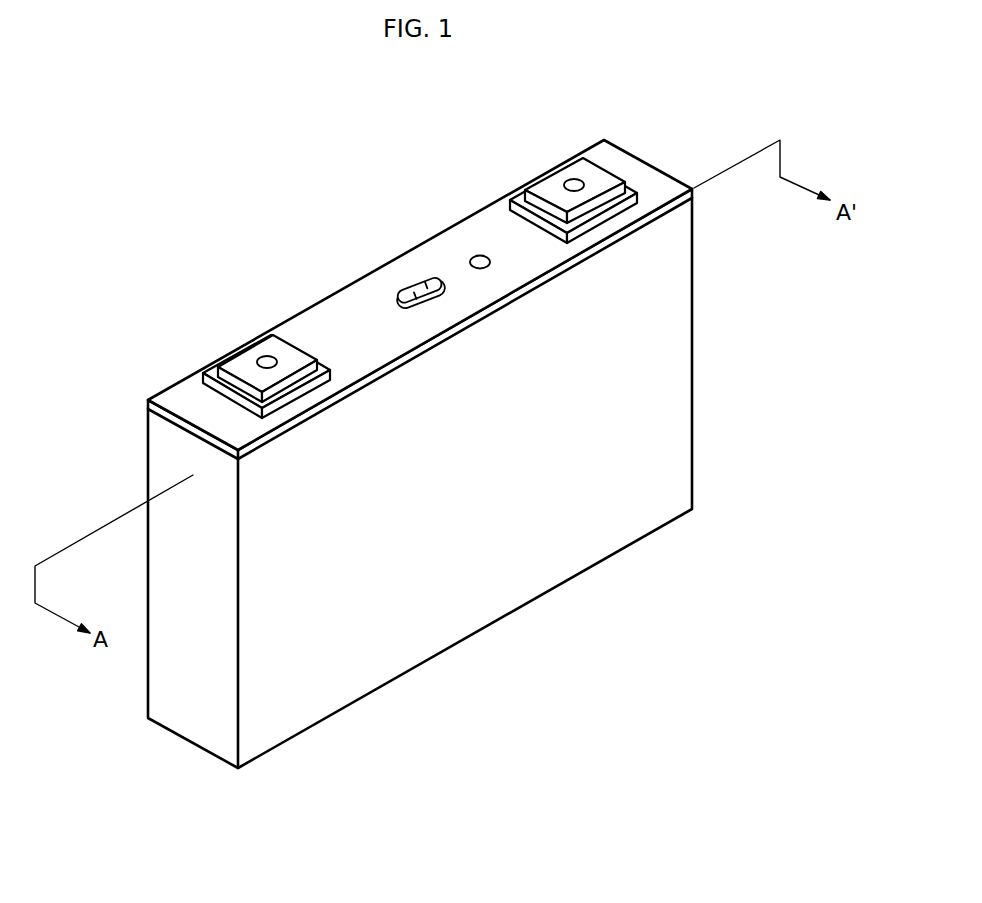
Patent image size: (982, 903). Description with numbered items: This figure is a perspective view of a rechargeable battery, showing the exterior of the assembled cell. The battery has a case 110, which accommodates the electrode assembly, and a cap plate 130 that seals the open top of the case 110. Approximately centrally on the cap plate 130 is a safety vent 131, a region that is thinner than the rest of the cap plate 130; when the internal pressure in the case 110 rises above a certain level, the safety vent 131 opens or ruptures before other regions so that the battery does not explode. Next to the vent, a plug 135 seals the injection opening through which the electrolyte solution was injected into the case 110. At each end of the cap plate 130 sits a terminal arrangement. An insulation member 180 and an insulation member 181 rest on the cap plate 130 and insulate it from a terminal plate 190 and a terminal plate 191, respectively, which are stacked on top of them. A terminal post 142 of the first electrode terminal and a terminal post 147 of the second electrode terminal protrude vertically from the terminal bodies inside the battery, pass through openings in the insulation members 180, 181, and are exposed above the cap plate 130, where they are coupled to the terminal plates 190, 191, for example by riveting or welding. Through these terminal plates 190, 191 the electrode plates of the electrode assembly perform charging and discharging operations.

The case 110 is at (493, 602).
The cap plate 130 is at (147, 405).
The safety vent 131 is at (417, 288).
The plug 135 is at (478, 256).
The terminal post 142 is at (267, 356).
The terminal post 147 is at (574, 180).
The insulation member 180 is at (210, 382).
The terminal plate 190 is at (237, 362).
The insulation member 181 is at (505, 203).
The terminal plate 191 is at (542, 187).